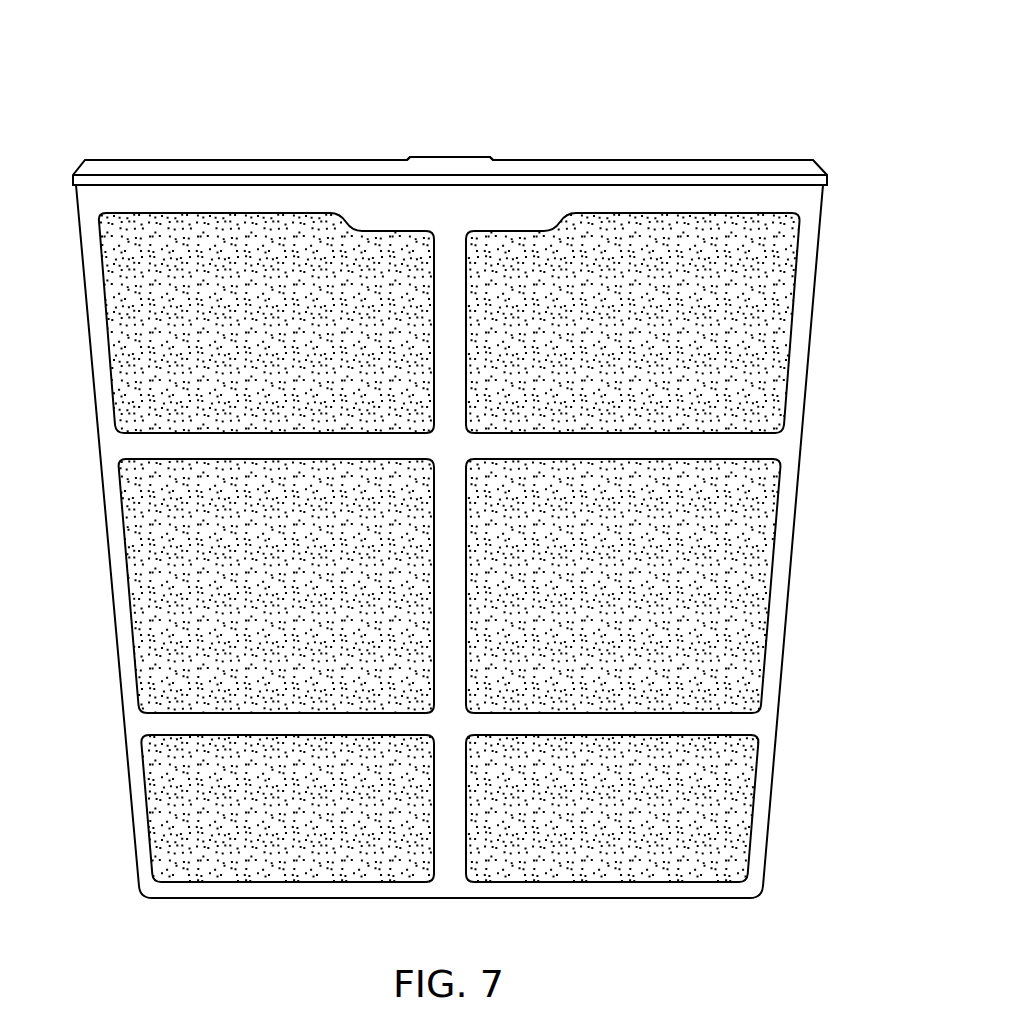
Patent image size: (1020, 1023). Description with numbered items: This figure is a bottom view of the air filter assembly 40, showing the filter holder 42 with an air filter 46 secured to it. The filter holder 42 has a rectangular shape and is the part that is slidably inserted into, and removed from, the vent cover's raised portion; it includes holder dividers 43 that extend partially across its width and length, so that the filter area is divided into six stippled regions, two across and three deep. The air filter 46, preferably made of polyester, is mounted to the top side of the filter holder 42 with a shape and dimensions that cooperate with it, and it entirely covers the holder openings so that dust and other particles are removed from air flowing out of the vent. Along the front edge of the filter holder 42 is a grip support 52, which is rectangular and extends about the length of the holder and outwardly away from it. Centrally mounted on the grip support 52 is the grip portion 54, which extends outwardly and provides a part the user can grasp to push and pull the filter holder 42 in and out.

The air filter assembly 40 is at (462, 484).
The filter holder 42 is at (113, 607).
The holder dividers 43 is at (178, 731).
The air filter 46 is at (738, 496).
The grip support 52 is at (797, 181).
The grip portion 54 is at (457, 166).